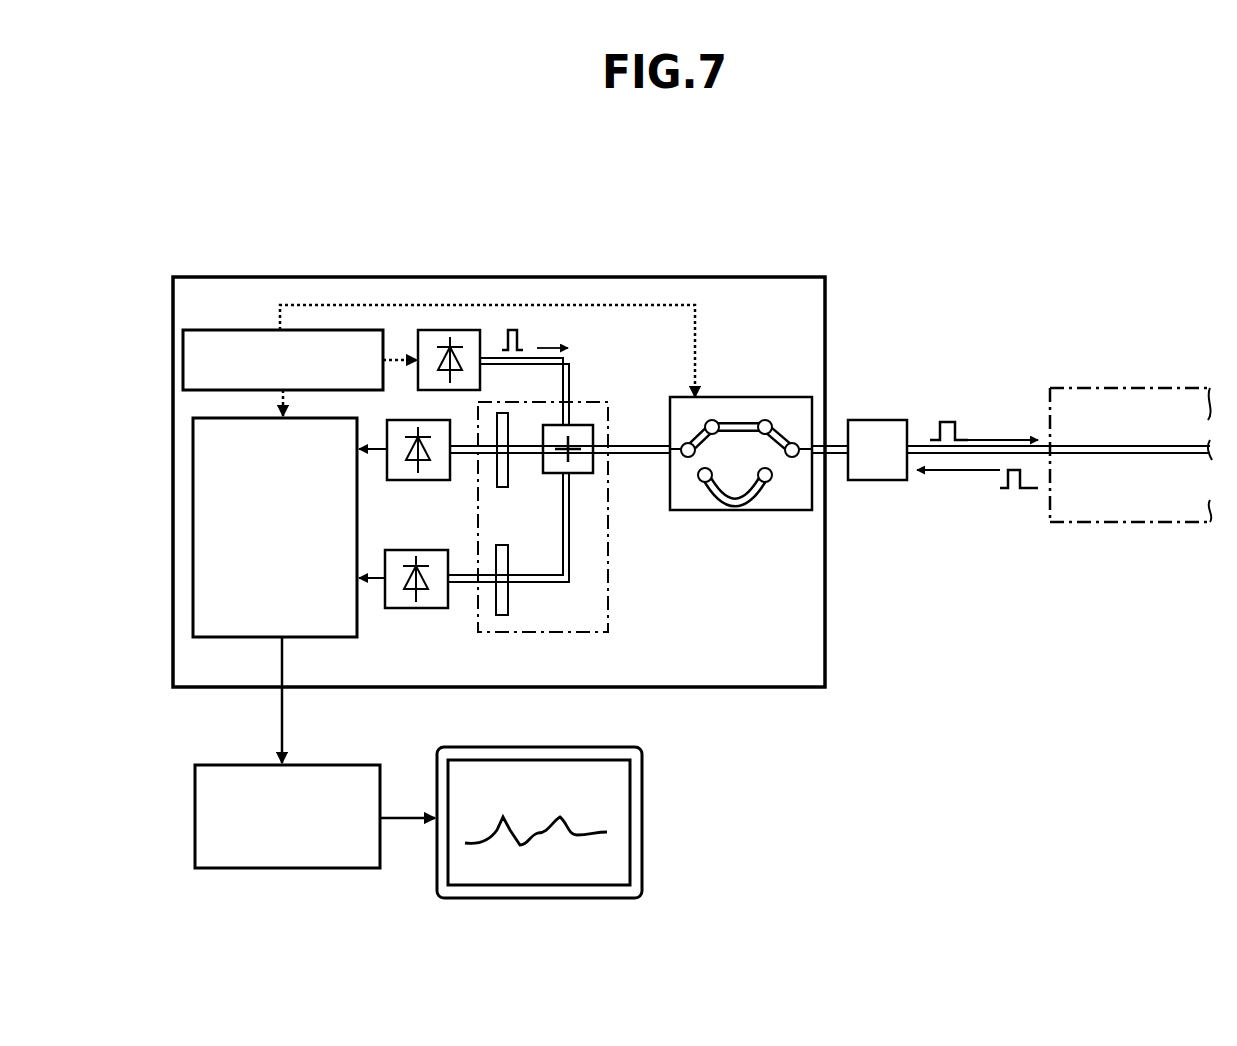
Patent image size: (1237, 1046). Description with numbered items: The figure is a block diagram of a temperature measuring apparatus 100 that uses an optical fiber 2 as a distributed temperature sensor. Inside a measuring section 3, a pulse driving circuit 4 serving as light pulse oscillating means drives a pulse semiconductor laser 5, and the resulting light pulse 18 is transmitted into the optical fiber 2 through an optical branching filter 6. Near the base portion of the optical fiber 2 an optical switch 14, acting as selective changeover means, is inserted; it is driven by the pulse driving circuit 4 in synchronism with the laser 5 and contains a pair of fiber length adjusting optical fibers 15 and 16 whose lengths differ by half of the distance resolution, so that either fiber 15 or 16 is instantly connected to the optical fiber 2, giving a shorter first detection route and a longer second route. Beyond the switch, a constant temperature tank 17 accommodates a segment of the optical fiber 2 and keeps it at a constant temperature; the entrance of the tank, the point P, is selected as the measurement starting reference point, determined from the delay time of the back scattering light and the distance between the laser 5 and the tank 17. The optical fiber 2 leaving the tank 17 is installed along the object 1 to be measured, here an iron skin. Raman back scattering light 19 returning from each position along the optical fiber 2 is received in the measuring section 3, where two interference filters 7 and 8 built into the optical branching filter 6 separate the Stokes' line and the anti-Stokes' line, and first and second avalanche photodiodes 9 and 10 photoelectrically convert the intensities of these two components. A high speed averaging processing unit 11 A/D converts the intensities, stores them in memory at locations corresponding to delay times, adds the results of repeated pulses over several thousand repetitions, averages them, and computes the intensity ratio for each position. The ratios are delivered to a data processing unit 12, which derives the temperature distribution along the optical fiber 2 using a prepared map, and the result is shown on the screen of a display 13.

The object to be measured 1 is at (1117, 388).
The optical fiber 2 is at (643, 457).
The measuring section 3 is at (508, 277).
The pulse driving circuit 4 is at (205, 329).
The pulse semiconductor laser 5 is at (427, 330).
The optical branching filter 6 is at (580, 403).
The interference filter 7 is at (510, 415).
The interference filter 8 is at (508, 603).
The first avalanche photodiode 9 is at (398, 420).
The second avalanche photodiode 10 is at (427, 608).
The high speed averaging processing unit 11 is at (195, 520).
The data processing unit 12 is at (195, 827).
The display 13 is at (643, 833).
The optical switch 14 is at (793, 397).
The fiber length adjusting optical fiber 15 is at (748, 420).
The fiber length adjusting optical fiber 16 is at (757, 495).
The constant temperature tank 17 is at (875, 420).
The light pulse 18 is at (960, 428).
The Raman back scattering light 19 is at (997, 492).
The temperature measuring apparatus 100 is at (925, 707).
The point P is at (838, 457).